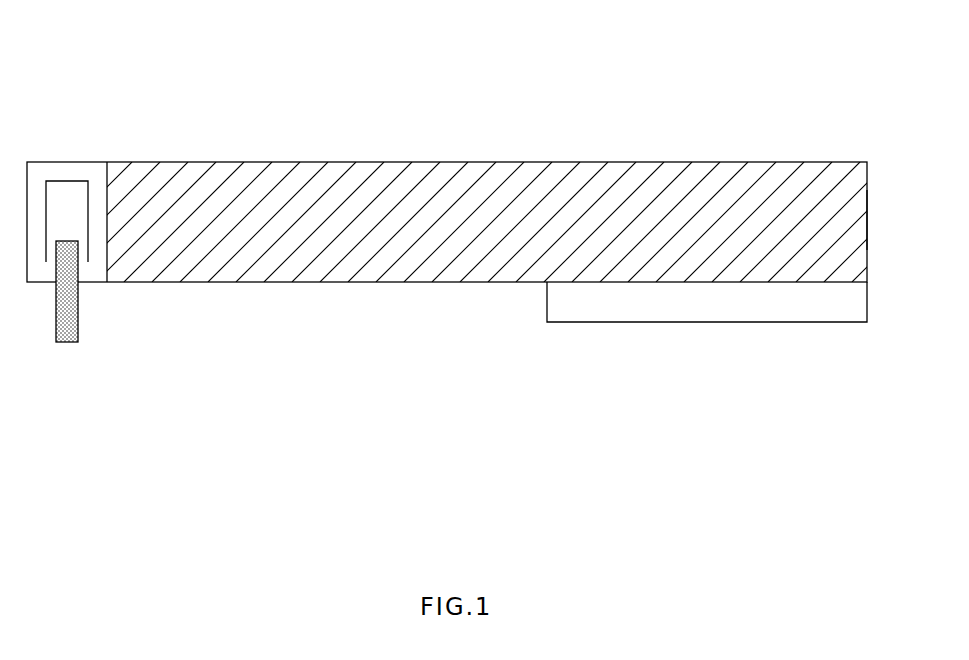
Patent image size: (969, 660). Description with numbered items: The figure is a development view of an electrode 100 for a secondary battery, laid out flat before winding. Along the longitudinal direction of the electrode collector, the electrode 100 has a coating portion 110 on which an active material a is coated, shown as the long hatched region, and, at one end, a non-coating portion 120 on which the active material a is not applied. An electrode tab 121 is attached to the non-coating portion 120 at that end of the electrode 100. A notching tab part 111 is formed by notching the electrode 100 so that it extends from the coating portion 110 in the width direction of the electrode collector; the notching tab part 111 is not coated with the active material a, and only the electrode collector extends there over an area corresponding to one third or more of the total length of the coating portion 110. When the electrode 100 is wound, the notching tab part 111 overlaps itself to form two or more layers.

The electrode 100 is at (490, 216).
The coating portion 110 is at (485, 162).
The notching tab part 111 is at (705, 322).
The non-coating portion 120 is at (67, 162).
The electrode tab 121 is at (64, 342).
The active material a is at (857, 218).